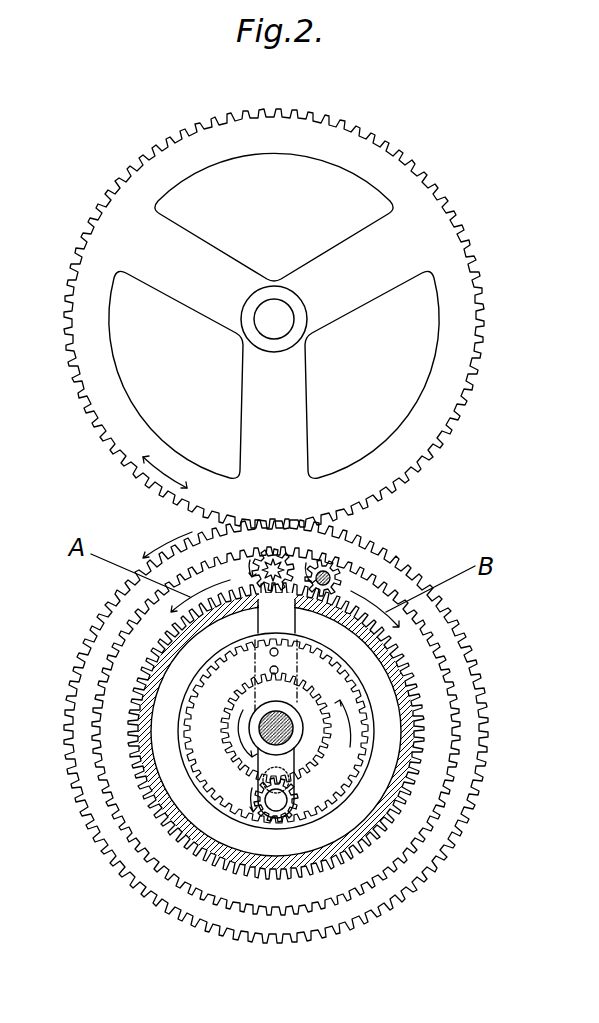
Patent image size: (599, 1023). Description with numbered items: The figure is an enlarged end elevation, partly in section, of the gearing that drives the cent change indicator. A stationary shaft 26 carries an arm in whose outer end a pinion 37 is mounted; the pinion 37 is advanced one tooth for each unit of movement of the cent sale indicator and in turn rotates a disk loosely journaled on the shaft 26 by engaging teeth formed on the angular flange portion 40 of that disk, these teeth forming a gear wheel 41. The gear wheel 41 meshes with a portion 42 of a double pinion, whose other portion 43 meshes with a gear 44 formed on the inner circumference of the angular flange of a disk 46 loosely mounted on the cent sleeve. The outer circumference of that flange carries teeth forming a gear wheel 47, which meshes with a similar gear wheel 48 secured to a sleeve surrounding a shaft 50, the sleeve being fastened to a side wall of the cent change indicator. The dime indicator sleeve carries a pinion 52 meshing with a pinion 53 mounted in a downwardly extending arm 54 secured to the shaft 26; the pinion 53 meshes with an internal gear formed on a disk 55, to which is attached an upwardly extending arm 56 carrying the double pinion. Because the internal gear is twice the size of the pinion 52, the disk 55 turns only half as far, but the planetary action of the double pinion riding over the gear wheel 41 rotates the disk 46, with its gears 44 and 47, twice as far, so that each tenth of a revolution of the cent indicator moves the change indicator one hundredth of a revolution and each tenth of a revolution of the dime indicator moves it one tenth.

The stationary shaft 26 is at (285, 723).
The pinion 37 is at (336, 575).
The angular flange portion 40 is at (234, 862).
The gear wheel 41 is at (279, 881).
The portion of double pinion 42 is at (271, 577).
The portion of double pinion 43 is at (297, 569).
The gear 44 is at (447, 675).
The disk 46 is at (307, 731).
The gear wheel 47 is at (448, 640).
The gear wheel 48 is at (278, 319).
The shaft 50 is at (288, 322).
The pinion 52 is at (302, 765).
The pinion 53 is at (297, 806).
The downwardly extending arm 54 is at (190, 738).
The disk 55 is at (283, 731).
The upwardly extending arm 56 is at (290, 627).